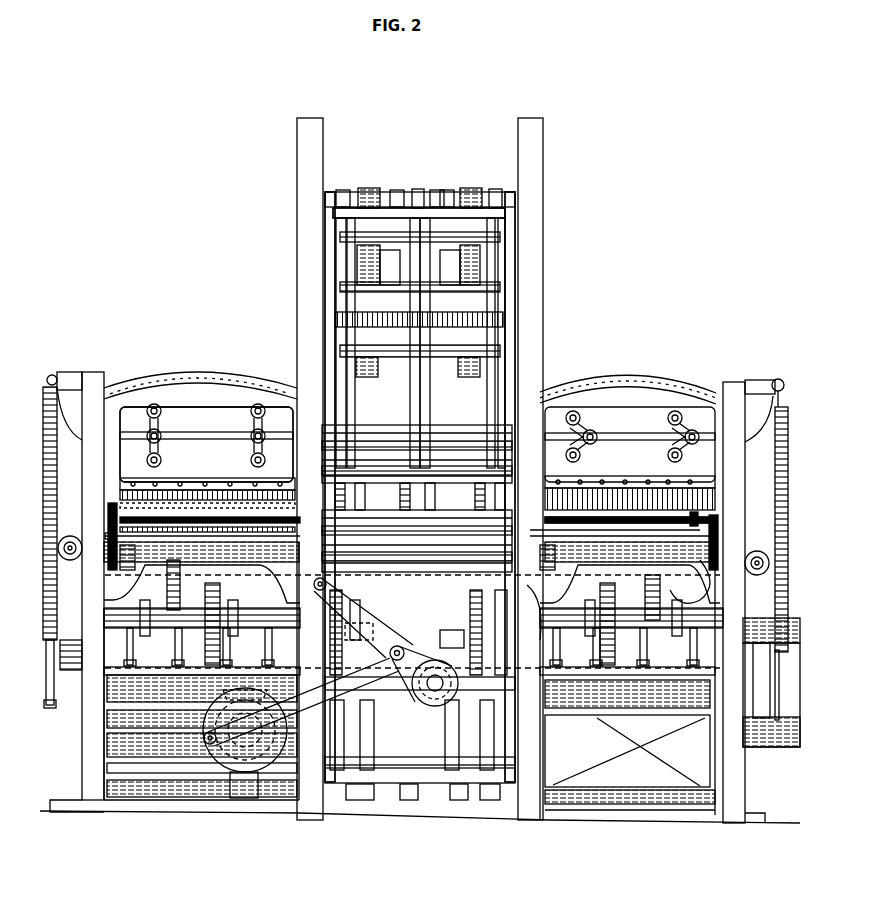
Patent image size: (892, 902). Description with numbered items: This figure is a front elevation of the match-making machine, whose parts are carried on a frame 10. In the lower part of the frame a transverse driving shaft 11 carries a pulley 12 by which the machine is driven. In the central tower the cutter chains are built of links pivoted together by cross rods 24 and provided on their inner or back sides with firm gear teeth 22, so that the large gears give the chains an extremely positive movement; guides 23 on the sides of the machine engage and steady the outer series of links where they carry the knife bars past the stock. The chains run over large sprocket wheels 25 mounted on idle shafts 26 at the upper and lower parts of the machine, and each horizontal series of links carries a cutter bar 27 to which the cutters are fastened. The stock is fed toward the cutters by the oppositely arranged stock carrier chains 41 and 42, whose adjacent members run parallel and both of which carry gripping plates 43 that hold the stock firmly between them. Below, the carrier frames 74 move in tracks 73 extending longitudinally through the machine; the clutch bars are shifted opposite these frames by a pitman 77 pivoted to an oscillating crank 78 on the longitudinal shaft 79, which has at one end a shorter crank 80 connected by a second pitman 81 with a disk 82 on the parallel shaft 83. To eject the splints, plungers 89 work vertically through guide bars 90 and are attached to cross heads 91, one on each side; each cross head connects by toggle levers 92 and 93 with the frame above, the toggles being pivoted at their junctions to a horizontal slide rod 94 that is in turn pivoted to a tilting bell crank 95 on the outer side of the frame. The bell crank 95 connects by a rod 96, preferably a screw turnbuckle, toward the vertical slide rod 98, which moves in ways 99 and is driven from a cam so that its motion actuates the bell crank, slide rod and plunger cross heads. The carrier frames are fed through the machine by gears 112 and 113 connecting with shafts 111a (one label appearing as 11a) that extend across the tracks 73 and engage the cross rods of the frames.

The frame 10 is at (540, 235).
The driving shaft 11 is at (118, 556).
The shaft 11a is at (280, 533).
The pulley 12 is at (780, 747).
The gear teeth 22 is at (416, 190).
The guides 23 is at (323, 290).
The cross rods 24 is at (448, 232).
The sprocket wheels 25 is at (366, 258).
The idle shaft 26 is at (335, 292).
The cutter bar 27 is at (500, 212).
The stock carrier chain 41 is at (502, 516).
The stock carrier chain 42 is at (470, 460).
The gripping plates 43 is at (462, 440).
The tracks 73 is at (528, 650).
The carrier frames 74 is at (624, 530).
The pitman 77 is at (363, 580).
The oscillating crank 78 is at (372, 632).
The shaft 79 is at (435, 692).
The shorter crank 80 is at (410, 648).
The second pitman 81 is at (345, 680).
The disk 82 is at (272, 768).
The shaft 83 is at (220, 760).
The plungers 89 is at (198, 492).
The guide bars 90 is at (195, 516).
The cross heads 91 is at (166, 476).
The toggle lever 92 is at (147, 445).
The toggle lever 93 is at (160, 408).
The slide rod 94 is at (188, 432).
The bell crank 95 is at (76, 388).
The rod 96 is at (783, 390).
The slide rod 98 is at (49, 708).
The ways 99 is at (47, 685).
The shaft 111a is at (688, 520).
The gear 112 is at (100, 552).
The gear 113 is at (106, 515).